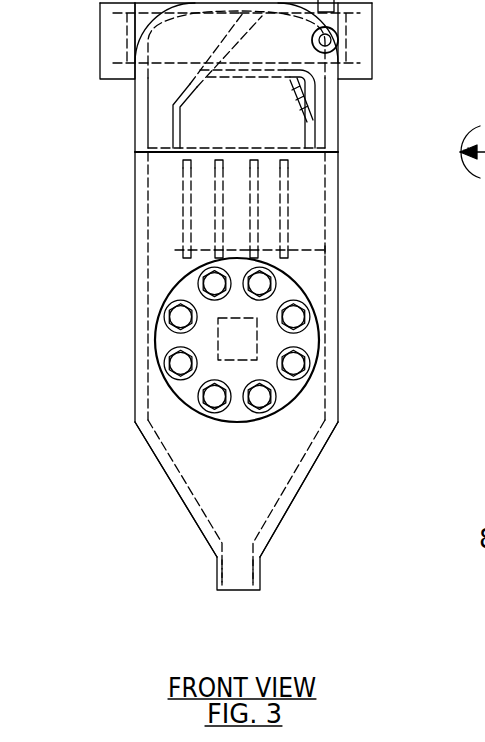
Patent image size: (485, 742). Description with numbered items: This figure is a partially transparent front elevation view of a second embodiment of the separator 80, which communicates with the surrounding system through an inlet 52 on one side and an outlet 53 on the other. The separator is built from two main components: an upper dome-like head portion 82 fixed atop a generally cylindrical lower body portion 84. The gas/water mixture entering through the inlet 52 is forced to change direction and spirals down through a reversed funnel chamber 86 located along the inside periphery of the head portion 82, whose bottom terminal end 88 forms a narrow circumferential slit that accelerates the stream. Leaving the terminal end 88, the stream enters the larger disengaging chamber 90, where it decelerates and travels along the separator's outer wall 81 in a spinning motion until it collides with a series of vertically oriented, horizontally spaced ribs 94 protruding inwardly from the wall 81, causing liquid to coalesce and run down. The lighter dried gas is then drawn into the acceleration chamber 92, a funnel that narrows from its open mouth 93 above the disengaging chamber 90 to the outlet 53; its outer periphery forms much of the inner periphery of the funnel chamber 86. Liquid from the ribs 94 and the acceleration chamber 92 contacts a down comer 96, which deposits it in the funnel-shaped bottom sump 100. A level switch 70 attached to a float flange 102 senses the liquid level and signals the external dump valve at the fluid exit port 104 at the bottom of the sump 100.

The inlet 52 is at (100, 41).
The outlet 53 is at (358, 42).
The separator 80 is at (345, 510).
The outer wall 81 is at (340, 228).
The head portion 82 is at (133, 118).
The lower body portion 84 is at (345, 342).
The reversed funnel chamber 86 is at (165, 88).
The bottom terminal end 88 is at (160, 148).
The disengaging chamber 90 is at (165, 208).
The acceleration chamber 92 is at (238, 97).
The open mouth 93 is at (290, 143).
The ribs 94 is at (187, 235).
The down comer 96 is at (307, 252).
The level switch 70 is at (217, 339).
The bottom sump 100 is at (198, 462).
The float flange 102 is at (167, 392).
The fluid exit port 104 is at (228, 590).